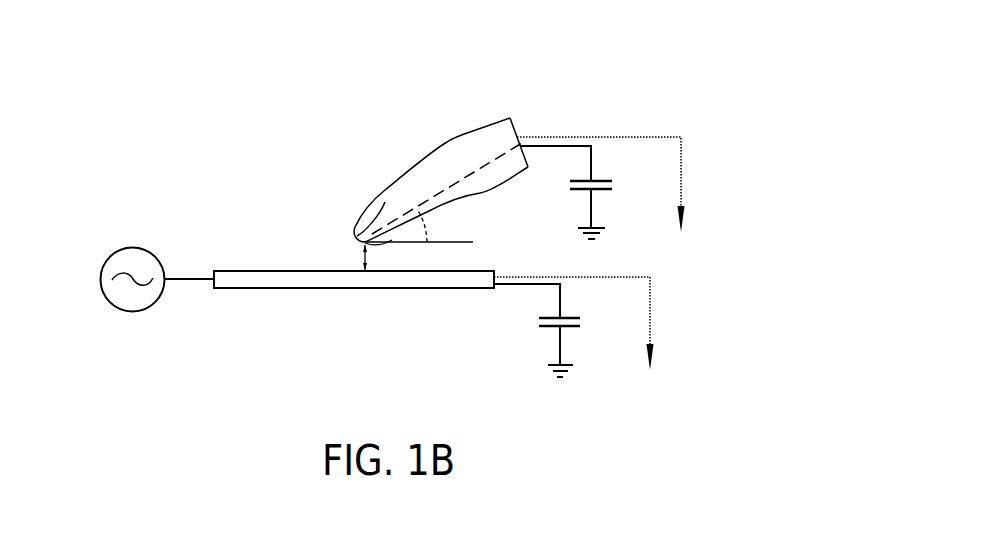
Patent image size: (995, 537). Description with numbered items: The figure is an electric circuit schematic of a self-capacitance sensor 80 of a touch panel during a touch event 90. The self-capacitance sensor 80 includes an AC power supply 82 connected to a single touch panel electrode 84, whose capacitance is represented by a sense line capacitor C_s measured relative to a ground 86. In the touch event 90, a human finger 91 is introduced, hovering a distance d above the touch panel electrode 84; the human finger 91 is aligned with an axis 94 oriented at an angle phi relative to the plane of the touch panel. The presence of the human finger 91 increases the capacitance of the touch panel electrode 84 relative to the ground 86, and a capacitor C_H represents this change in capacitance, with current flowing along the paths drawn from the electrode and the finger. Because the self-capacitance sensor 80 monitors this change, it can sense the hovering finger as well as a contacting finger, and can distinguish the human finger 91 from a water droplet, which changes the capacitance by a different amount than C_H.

The self-capacitance sensor 80 is at (250, 148).
The AC power supply 82 is at (132, 247).
The touch panel electrode 84 is at (263, 270).
The ground 86 is at (568, 380).
The touch event 90 is at (608, 50).
The human finger 91 is at (447, 142).
The axis 94 is at (427, 200).